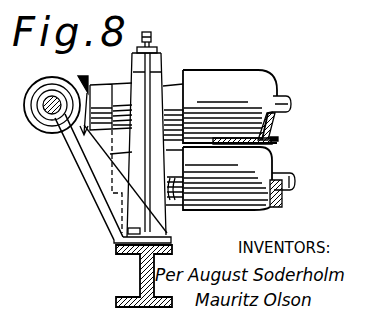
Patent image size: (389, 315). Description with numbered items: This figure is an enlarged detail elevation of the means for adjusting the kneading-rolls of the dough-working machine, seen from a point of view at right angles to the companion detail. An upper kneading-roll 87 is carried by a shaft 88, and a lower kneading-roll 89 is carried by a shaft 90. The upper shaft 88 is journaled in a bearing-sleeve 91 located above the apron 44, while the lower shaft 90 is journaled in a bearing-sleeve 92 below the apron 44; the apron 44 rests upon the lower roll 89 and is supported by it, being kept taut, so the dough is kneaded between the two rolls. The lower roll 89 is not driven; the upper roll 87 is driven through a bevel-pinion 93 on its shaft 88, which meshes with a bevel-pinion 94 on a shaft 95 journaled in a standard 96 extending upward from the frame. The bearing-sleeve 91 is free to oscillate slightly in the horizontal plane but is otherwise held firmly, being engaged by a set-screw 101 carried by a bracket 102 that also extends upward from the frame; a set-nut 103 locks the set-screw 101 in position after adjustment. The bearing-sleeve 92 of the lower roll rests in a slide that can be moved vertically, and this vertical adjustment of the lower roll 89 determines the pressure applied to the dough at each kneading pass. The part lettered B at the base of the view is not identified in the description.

The apron 44 is at (278, 138).
The upper kneading-roll 87 is at (258, 72).
The upper kneading-roll shaft 88 is at (285, 104).
The lower kneading-roll 89 is at (274, 157).
The lower kneading-roll shaft 90 is at (270, 160).
The bearing-sleeve 91 is at (170, 88).
The bearing-sleeve 92 is at (178, 188).
The bevel-pinion 93 is at (78, 82).
The bevel-pinion 94 is at (36, 86).
The shaft 95 is at (47, 108).
The standard 96 is at (77, 163).
The set-screw 101 is at (150, 32).
The bracket 102 is at (135, 130).
The set-nut 103 is at (154, 48).
The base rail B is at (141, 273).